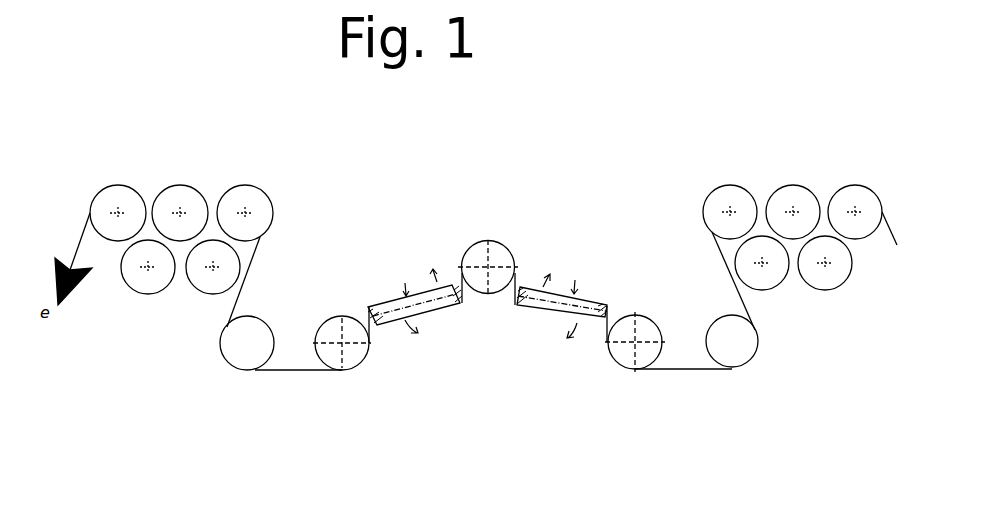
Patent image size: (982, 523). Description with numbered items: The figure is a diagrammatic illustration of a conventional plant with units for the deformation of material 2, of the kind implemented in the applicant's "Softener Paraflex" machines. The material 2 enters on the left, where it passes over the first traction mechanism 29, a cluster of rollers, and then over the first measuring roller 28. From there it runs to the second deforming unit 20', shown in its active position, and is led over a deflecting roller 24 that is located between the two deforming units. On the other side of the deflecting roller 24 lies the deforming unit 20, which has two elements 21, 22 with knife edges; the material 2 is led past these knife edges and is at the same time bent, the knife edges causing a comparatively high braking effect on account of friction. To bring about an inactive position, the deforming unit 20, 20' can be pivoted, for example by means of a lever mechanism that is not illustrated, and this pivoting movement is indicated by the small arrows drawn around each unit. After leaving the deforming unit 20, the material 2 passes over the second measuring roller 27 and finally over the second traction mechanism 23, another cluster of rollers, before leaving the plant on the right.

The material 2 is at (717, 252).
The deforming unit 20 is at (562, 290).
The second deforming unit 20' is at (415, 288).
The element 21 is at (602, 317).
The element 22 is at (518, 290).
The traction mechanism 23 is at (813, 297).
The deflecting roller 24 is at (490, 290).
The measuring roller 27 is at (742, 367).
The measuring roller 28 is at (243, 357).
The traction mechanism 29 is at (137, 302).